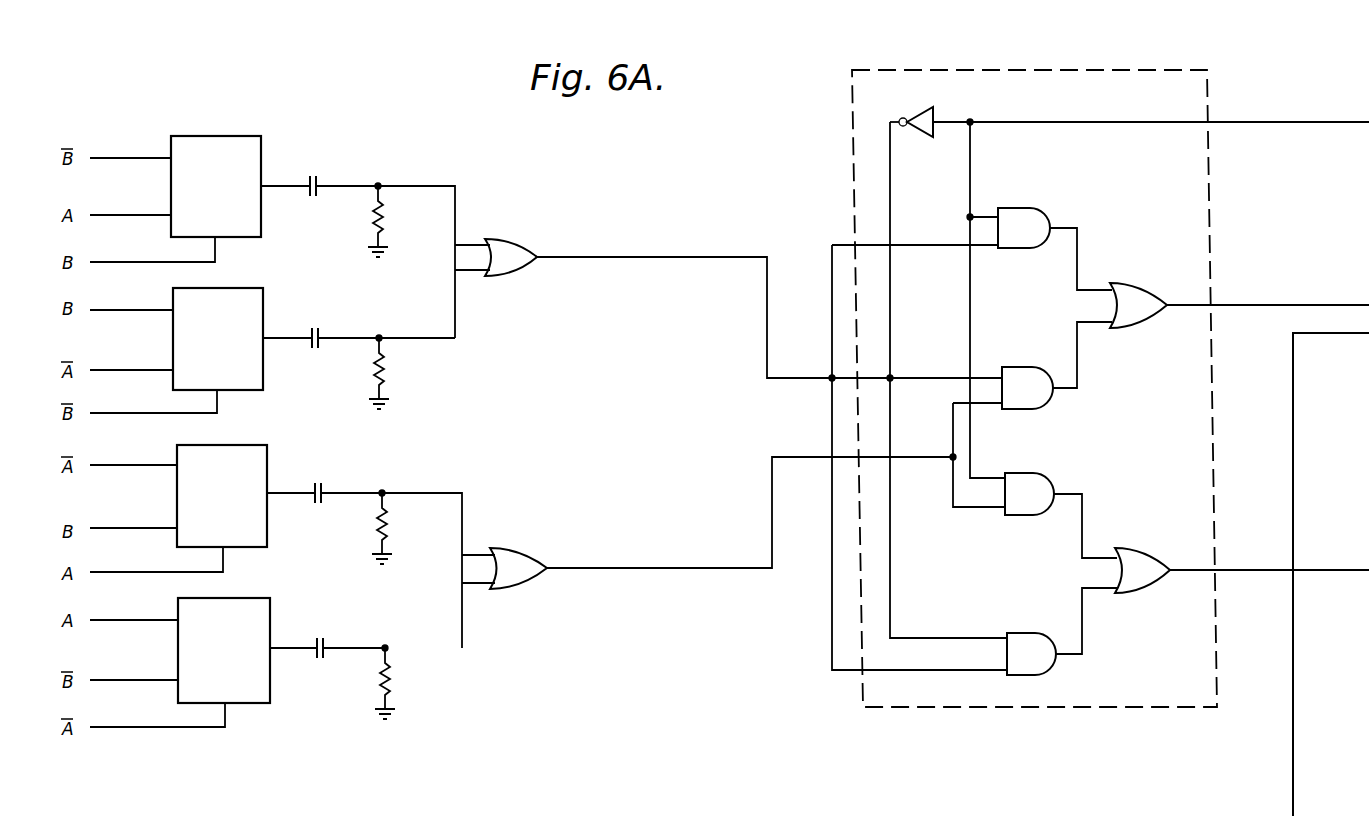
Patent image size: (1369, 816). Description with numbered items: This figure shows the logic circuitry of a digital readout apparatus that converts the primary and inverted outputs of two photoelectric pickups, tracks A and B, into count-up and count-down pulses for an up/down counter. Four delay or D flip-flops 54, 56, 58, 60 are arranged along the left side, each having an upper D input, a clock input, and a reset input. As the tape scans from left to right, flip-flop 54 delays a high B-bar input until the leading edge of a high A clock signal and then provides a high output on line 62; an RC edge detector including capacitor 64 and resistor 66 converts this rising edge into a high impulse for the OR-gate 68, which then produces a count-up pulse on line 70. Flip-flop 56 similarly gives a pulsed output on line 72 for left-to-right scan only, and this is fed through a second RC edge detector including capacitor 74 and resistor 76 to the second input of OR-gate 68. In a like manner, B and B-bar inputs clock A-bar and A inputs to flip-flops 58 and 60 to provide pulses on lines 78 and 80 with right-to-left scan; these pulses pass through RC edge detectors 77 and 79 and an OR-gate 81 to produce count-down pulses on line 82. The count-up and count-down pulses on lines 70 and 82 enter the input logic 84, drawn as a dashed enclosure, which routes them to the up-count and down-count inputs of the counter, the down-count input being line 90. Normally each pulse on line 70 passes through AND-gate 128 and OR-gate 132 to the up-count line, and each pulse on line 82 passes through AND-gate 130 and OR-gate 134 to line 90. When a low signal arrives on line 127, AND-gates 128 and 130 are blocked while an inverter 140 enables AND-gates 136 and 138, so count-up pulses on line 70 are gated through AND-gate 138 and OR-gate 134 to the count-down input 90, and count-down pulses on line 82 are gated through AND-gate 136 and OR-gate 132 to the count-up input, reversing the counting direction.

The D flip-flop 54 is at (208, 136).
The D flip-flop 56 is at (230, 288).
The D flip-flop 58 is at (233, 445).
The D flip-flop 60 is at (234, 598).
The line 62 is at (278, 186).
The capacitor 64 is at (318, 195).
The resistor 66 is at (366, 218).
The OR-gate 68 is at (512, 277).
The count-up line 70 is at (585, 256).
The line 72 is at (283, 338).
The capacitor 74 is at (319, 346).
The resistor 76 is at (367, 370).
The RC edge detector 77 is at (373, 504).
The line 78 is at (286, 493).
The RC edge detector 79 is at (376, 670).
The line 80 is at (290, 648).
The OR-gate 81 is at (518, 590).
The count-down line 82 is at (610, 568).
The input logic 84 is at (1143, 70).
The count-down line 90 is at (1352, 333).
The line 127 is at (1294, 122).
The AND-gate 128 is at (1030, 208).
The AND-gate 130 is at (1026, 473).
The OR-gate 132 is at (1135, 283).
The OR-gate 134 is at (1140, 548).
The AND-gate 136 is at (1022, 367).
The AND-gate 138 is at (1028, 633).
The inverter 140 is at (933, 107).